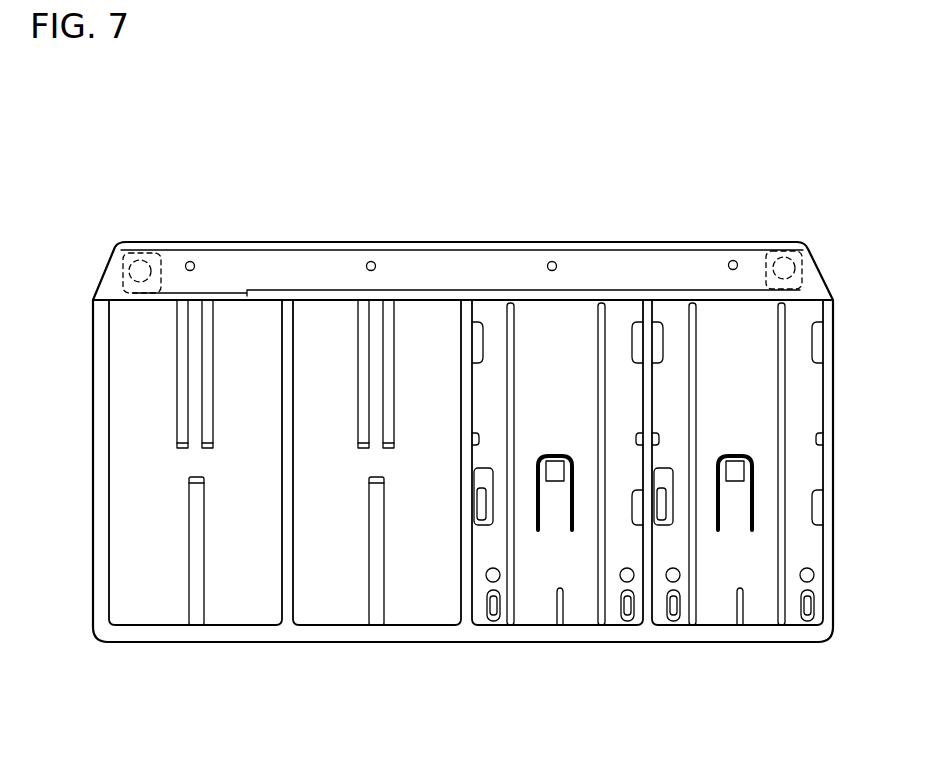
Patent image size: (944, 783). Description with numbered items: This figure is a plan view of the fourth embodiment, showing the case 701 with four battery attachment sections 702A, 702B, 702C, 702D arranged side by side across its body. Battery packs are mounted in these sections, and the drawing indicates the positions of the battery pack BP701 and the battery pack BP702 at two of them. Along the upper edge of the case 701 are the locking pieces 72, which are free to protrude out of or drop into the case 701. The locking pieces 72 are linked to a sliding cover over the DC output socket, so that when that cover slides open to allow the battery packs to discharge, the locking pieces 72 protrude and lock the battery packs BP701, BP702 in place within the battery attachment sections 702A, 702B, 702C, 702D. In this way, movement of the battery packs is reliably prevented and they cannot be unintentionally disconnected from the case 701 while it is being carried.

The case 701 is at (697, 243).
The locking pieces 72 is at (287, 292).
The battery pack BP701 is at (130, 320).
The battery pack BP702 is at (432, 314).
The battery attachment section 702A is at (158, 627).
The battery attachment section 702B is at (335, 627).
The battery attachment section 702C is at (541, 313).
The battery attachment section 702D is at (746, 313).